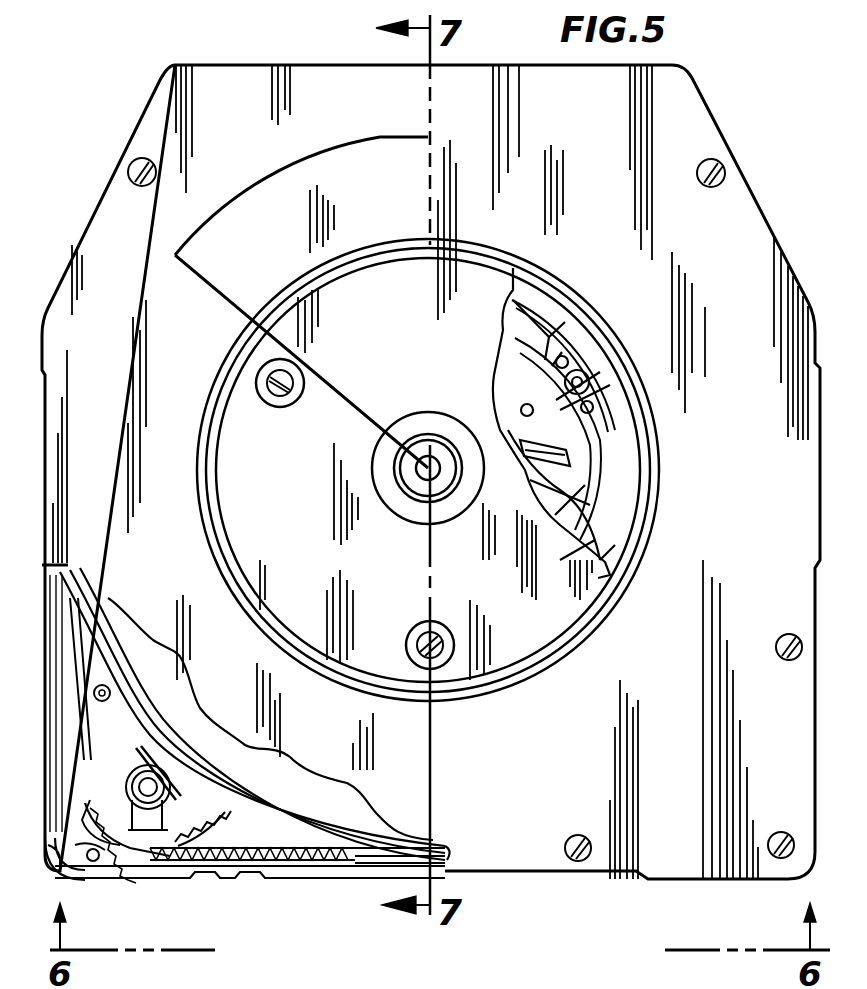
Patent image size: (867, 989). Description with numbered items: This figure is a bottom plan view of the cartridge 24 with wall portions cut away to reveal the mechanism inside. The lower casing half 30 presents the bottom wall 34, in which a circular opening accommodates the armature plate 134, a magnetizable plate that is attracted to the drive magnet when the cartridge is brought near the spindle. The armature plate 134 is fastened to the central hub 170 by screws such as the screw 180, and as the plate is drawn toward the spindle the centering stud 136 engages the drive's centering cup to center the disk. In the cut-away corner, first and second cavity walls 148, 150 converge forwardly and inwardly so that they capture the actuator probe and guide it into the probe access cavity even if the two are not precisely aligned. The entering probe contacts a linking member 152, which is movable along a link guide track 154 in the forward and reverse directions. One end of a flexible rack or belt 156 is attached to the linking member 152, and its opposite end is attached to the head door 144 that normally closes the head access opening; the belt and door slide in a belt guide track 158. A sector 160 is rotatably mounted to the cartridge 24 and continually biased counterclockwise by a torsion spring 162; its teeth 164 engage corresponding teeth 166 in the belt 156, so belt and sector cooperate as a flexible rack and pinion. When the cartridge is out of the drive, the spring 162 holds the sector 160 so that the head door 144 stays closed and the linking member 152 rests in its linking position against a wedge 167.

The bottom wall 34 is at (726, 176).
The centering stud 136 is at (428, 456).
The screw 180 is at (280, 398).
The central hub 170 is at (618, 462).
The armature plate 134 is at (556, 606).
The link guide track 154 is at (97, 598).
The belt guide track 158 is at (132, 628).
The torsion spring 162 is at (165, 745).
The linking member 152 is at (78, 805).
The wedge 167 is at (98, 800).
The sector 160 is at (224, 781).
The teeth 164 is at (215, 846).
The teeth 166 is at (285, 855).
The flexible rack or belt 156 is at (240, 868).
The head door 144 is at (410, 858).
The first cavity wall 148 is at (62, 862).
The second cavity wall 150 is at (82, 870).
The cartridge 24 is at (315, 985).
The lower casing half 30 is at (613, 985).